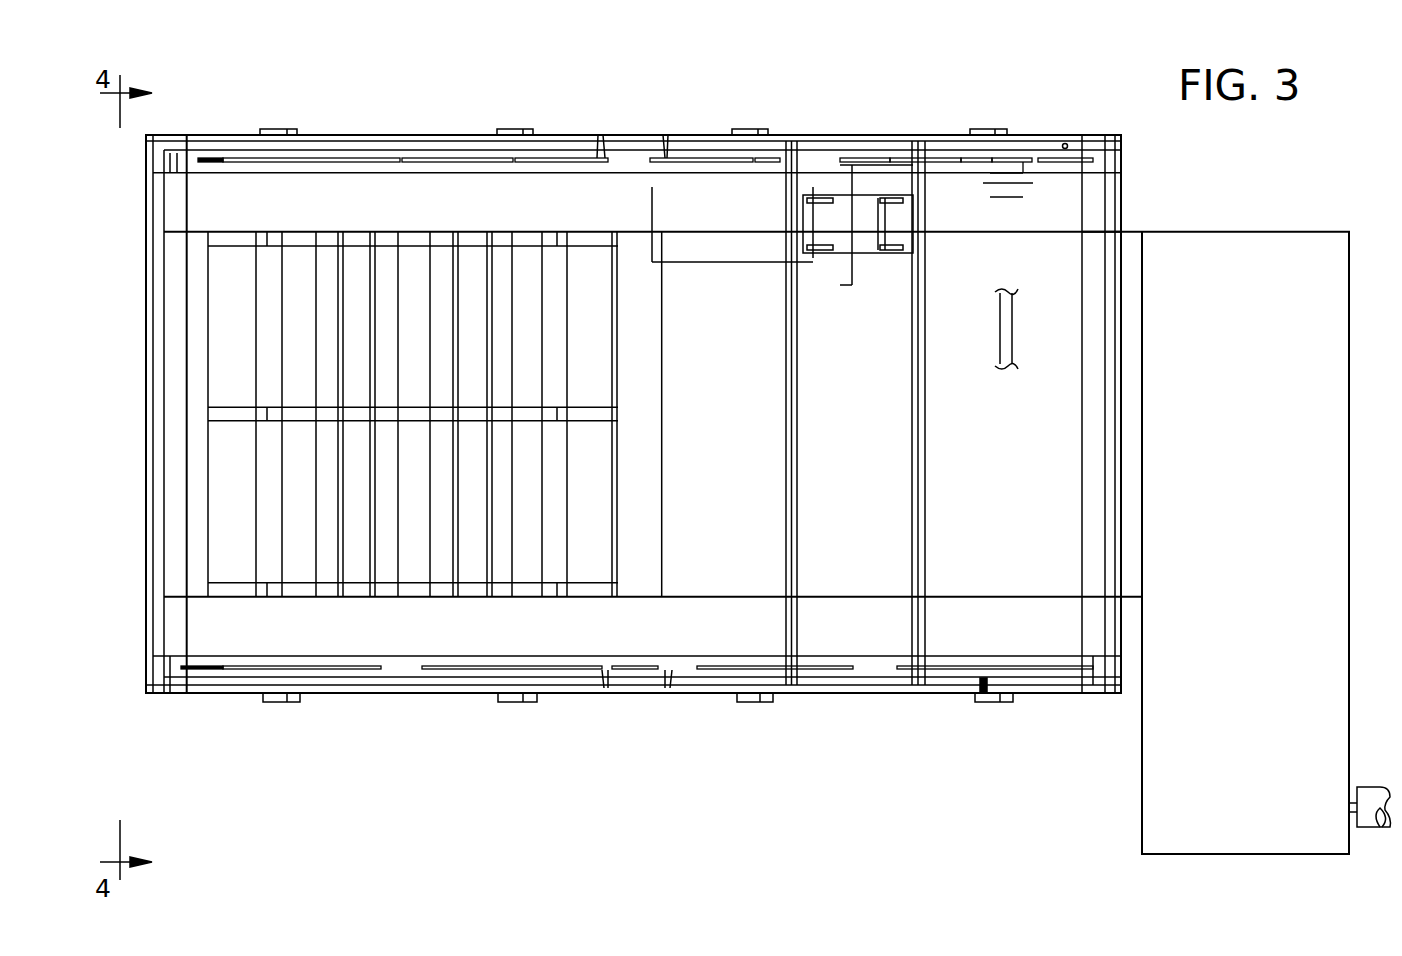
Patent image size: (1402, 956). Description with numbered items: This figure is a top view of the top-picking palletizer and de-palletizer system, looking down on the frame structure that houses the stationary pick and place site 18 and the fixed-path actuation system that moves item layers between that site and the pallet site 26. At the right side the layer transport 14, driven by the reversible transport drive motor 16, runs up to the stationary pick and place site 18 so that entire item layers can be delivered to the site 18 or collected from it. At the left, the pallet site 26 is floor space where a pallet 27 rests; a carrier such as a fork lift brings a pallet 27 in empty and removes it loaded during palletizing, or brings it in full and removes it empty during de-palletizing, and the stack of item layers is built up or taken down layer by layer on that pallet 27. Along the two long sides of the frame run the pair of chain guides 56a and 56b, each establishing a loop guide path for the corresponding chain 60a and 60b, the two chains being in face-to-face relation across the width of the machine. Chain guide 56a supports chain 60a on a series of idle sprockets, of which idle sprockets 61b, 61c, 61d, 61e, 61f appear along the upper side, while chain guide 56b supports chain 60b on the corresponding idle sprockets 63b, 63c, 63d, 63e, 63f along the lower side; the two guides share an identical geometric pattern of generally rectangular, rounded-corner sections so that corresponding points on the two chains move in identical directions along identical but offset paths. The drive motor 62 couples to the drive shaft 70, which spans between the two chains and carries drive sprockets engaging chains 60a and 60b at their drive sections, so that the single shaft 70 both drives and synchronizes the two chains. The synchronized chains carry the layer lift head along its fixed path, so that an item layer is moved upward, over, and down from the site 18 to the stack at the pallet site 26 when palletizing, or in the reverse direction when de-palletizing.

The layer transport 14 is at (1228, 742).
The reversible transport drive motor 16 is at (1373, 827).
The stationary pick and place site 18 is at (1003, 445).
The pallet site 26 is at (430, 596).
The pallet 27 is at (243, 597).
The chain guide 56a is at (1098, 153).
The chain guide 56b is at (180, 668).
The chain 60a is at (400, 162).
The chain 60b is at (400, 665).
The idle sprocket 61b is at (1070, 163).
The idle sprocket 61c is at (763, 163).
The idle sprocket 61d is at (636, 163).
The idle sprocket 61e is at (430, 165).
The idle sprocket 61f is at (245, 163).
The drive motor 62 is at (862, 255).
The idle sprocket 63b is at (940, 663).
The idle sprocket 63c is at (698, 663).
The idle sprocket 63d is at (612, 662).
The idle sprocket 63e is at (458, 662).
The idle sprocket 63f is at (233, 667).
The drive shaft 70 is at (1013, 335).